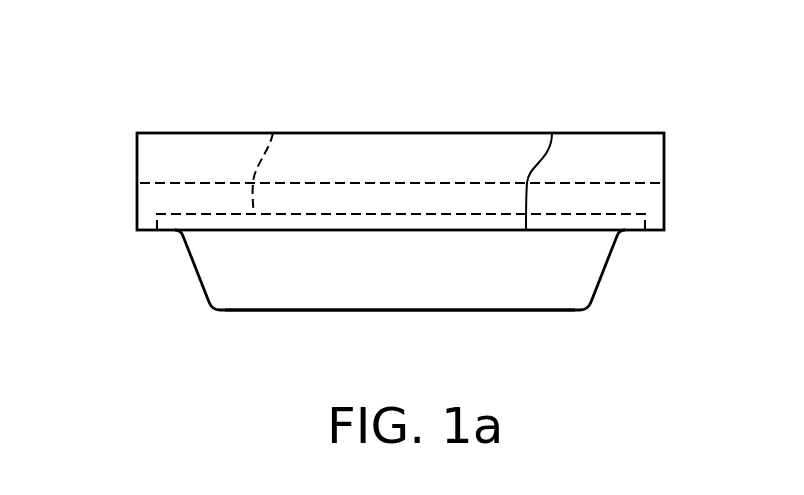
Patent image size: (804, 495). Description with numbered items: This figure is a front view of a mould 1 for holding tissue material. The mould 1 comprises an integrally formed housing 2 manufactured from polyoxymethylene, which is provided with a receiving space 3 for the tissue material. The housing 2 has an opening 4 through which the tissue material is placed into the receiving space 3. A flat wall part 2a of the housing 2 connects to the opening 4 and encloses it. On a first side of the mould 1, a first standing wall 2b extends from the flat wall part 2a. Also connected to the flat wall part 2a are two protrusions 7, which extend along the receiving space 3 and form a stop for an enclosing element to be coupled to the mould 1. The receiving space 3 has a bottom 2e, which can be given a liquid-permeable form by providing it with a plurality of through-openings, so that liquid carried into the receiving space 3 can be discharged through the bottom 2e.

The mould 1 is at (115, 91).
The housing 2 is at (606, 270).
The flat wall part 2a is at (552, 133).
The first standing wall 2b is at (635, 162).
The bottom 2e is at (400, 312).
The receiving space 3 is at (407, 279).
The opening 4 is at (397, 223).
The protrusions 7 is at (273, 133).